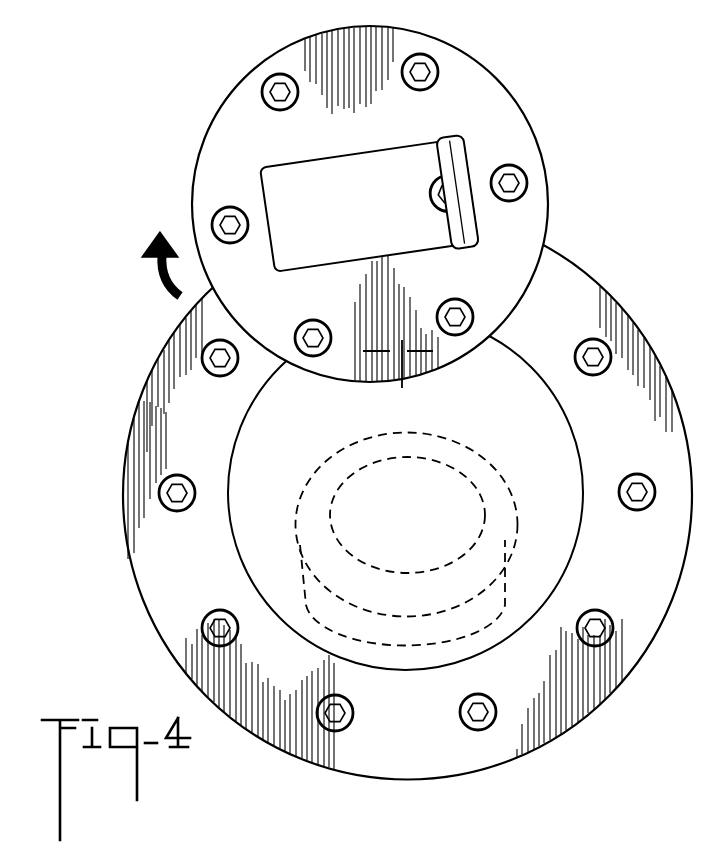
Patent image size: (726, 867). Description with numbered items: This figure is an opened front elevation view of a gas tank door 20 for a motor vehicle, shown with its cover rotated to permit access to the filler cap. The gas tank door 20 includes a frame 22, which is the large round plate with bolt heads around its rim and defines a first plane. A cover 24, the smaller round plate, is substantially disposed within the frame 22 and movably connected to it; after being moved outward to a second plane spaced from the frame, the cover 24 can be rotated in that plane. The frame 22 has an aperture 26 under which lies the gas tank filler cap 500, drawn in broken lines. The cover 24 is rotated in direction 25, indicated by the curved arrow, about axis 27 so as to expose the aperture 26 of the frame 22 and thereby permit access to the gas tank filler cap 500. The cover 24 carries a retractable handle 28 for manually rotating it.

The gas tank door 20 is at (641, 204).
The frame 22 is at (590, 710).
The cover 24 is at (208, 128).
The direction of rotation 25 is at (163, 288).
The aperture 26 is at (533, 525).
The axis of rotation 27 is at (403, 354).
The retractable handle 28 is at (453, 157).
The gas tank filler cap 500 is at (313, 477).